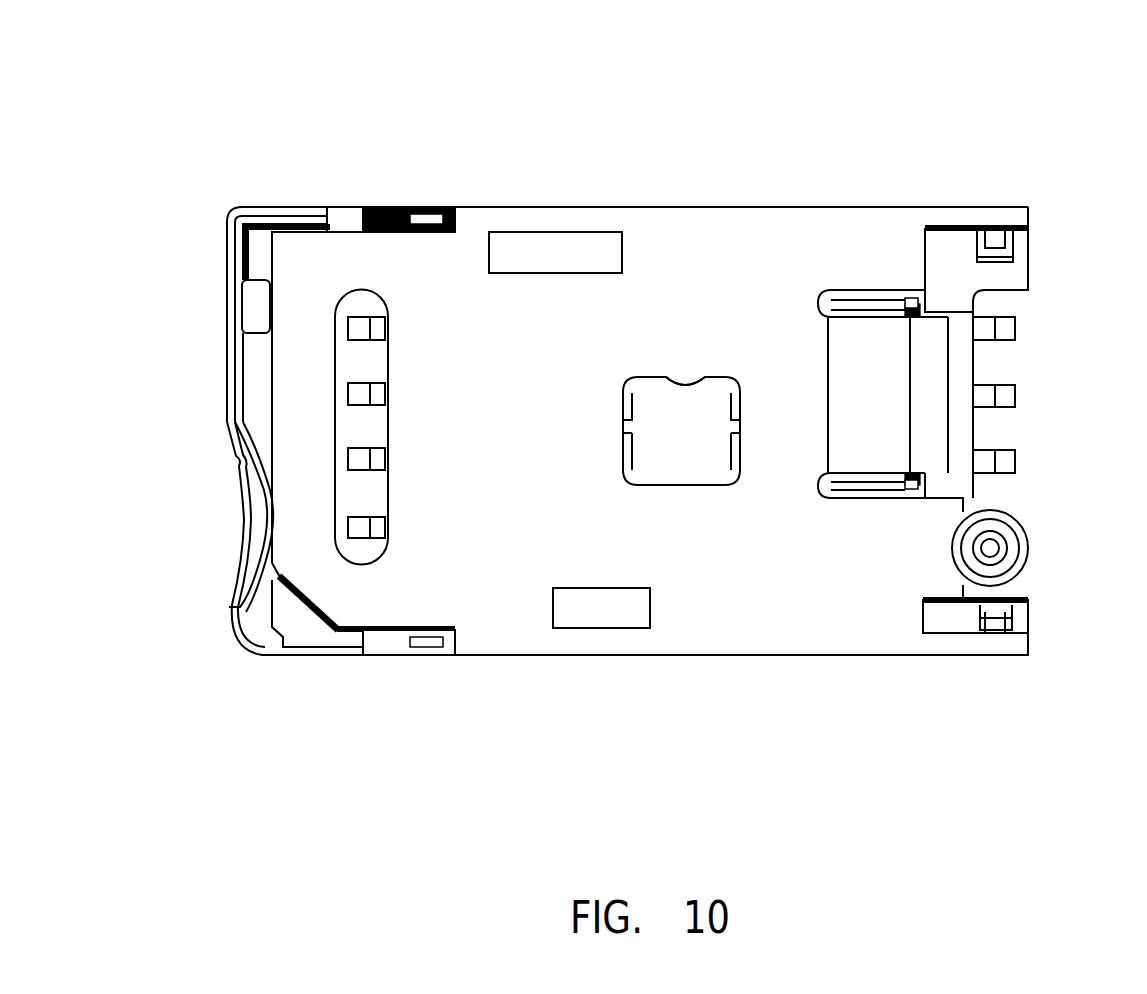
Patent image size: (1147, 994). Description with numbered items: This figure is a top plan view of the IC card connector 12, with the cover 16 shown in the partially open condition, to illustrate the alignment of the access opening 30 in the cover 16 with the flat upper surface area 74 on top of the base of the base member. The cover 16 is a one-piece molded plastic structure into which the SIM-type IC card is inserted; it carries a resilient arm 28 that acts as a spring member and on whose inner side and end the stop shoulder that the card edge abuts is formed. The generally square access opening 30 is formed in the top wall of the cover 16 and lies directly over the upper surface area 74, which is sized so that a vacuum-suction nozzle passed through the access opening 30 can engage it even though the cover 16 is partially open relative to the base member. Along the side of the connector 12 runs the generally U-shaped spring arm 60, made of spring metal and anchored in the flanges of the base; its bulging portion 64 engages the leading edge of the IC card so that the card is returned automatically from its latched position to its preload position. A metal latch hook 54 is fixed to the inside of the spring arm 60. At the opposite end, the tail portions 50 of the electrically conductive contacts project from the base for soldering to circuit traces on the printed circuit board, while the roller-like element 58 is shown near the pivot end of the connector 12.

The IC card connector 12 is at (524, 123).
The cover 16 is at (684, 203).
The resilient arm 28 is at (877, 443).
The access opening 30 is at (700, 388).
The tail portions 50 is at (1005, 330).
The latch hook 54 is at (255, 308).
The roller 58 is at (1018, 530).
The U-shaped spring arm 60 is at (230, 377).
The bulging portion 64 is at (258, 510).
The upper surface area 74 is at (692, 446).